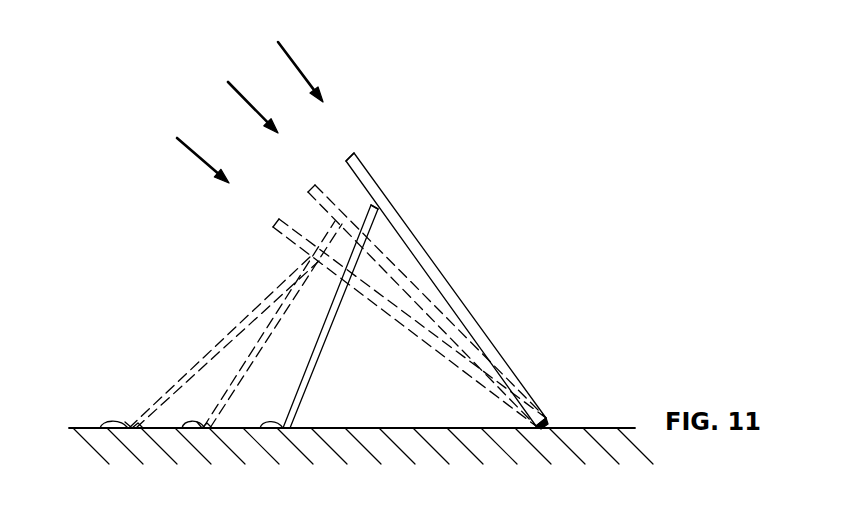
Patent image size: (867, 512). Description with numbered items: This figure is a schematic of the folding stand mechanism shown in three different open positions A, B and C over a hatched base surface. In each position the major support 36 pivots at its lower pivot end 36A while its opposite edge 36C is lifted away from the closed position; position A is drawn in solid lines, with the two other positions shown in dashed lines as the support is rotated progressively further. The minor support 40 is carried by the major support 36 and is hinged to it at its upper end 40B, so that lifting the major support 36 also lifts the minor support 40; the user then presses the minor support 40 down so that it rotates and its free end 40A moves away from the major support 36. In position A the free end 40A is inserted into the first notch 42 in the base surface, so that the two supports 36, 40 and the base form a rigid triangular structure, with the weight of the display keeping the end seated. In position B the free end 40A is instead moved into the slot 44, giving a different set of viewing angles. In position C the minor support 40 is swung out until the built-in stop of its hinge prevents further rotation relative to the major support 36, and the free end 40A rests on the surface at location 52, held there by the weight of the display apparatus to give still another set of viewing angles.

The major support 36 is at (435, 262).
The major support pivot end 36A is at (545, 424).
The edge of major support 36C is at (358, 157).
The minor support 40 is at (192, 369).
The free end of minor support 40A is at (287, 429).
The minor support hinge end 40B is at (373, 206).
The first notch 42 is at (266, 426).
The slot 44 is at (190, 424).
The location 52 is at (106, 425).
The open position A is at (279, 53).
The open position B is at (246, 102).
The open position C is at (182, 150).